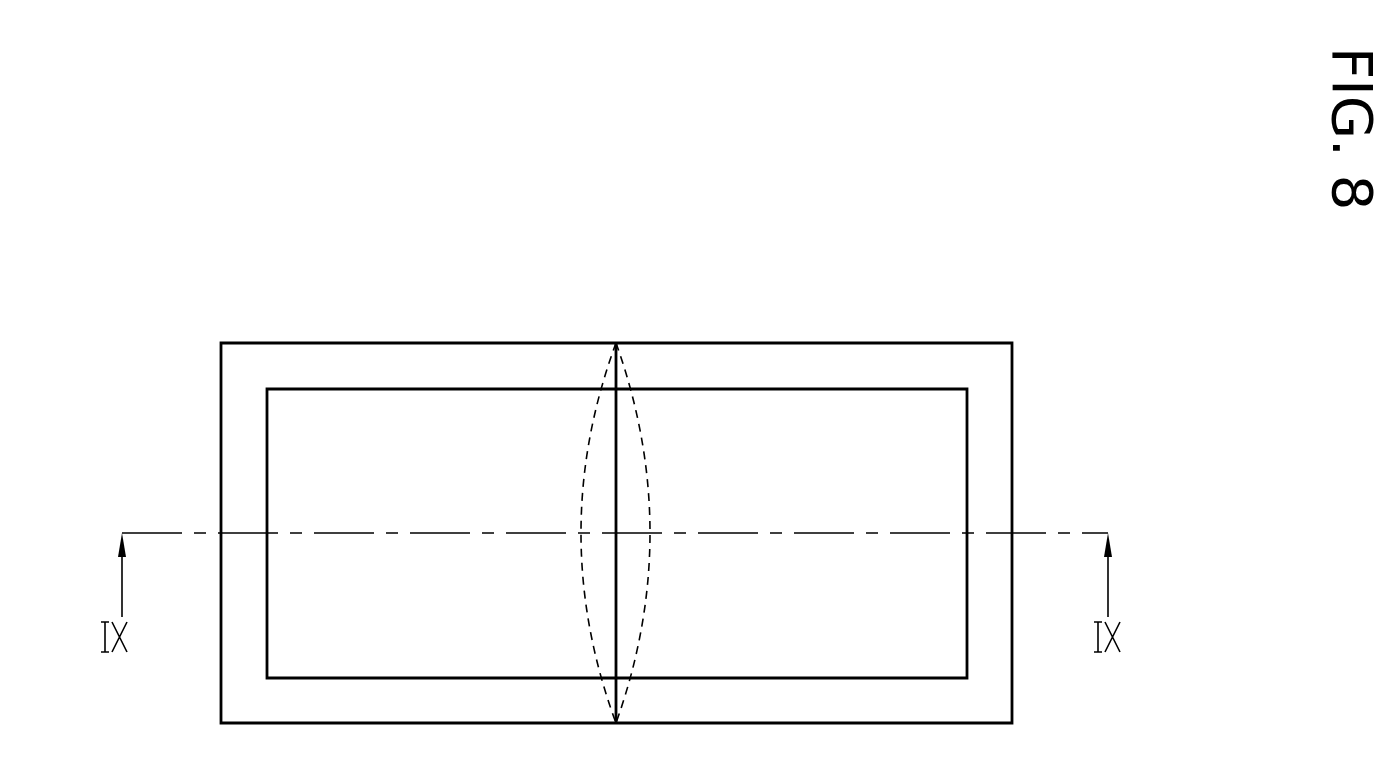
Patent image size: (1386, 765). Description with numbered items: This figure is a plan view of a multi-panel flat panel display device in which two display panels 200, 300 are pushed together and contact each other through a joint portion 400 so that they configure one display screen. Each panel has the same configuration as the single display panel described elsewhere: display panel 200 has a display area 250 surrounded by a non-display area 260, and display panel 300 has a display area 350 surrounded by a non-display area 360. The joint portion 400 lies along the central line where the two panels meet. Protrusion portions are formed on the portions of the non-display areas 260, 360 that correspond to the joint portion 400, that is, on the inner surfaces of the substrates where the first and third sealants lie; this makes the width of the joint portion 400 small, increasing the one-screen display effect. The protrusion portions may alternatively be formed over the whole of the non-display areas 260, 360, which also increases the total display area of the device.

The display panel 200 is at (558, 306).
The display area 250 is at (319, 408).
The non-display area 260 is at (390, 381).
The display panel 300 is at (940, 312).
The display area 350 is at (769, 408).
The non-display area 360 is at (830, 381).
The joint portion 400 is at (633, 368).